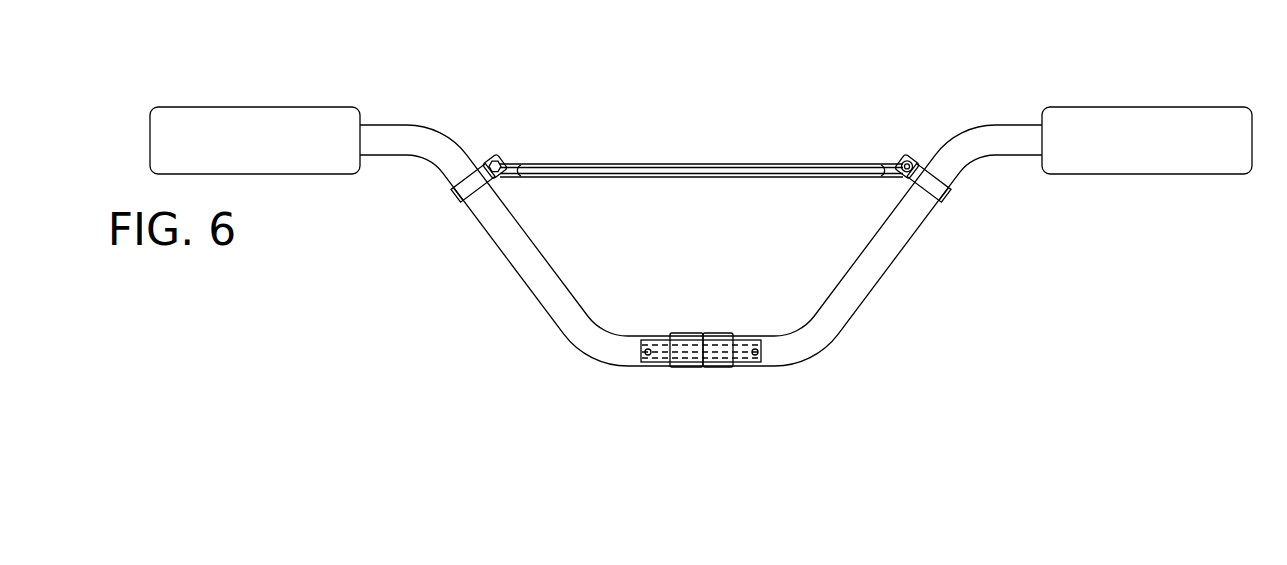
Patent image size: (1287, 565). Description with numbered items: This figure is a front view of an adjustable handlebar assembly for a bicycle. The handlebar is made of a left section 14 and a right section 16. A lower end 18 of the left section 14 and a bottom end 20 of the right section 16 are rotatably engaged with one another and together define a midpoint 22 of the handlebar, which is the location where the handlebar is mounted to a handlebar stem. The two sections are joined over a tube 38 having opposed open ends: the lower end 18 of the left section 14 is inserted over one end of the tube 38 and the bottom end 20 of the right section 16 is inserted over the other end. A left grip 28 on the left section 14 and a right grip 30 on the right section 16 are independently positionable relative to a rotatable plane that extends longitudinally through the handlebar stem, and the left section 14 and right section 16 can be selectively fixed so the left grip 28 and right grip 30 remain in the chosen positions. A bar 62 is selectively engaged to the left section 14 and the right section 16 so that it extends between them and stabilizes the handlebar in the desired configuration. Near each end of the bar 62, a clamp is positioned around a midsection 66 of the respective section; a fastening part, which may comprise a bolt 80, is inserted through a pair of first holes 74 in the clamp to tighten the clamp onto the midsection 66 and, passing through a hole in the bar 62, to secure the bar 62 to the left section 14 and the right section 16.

The left section 14 is at (522, 304).
The right section 16 is at (868, 320).
The lower end 18 is at (685, 342).
The bottom end 20 is at (722, 342).
The midpoint 22 is at (701, 381).
The left grip 28 is at (247, 95).
The right grip 30 is at (1192, 93).
The tube 38 is at (740, 366).
The bar 62 is at (702, 150).
The midsection 66 is at (486, 238).
The first holes 74 is at (948, 195).
The bolt 80 is at (910, 147).